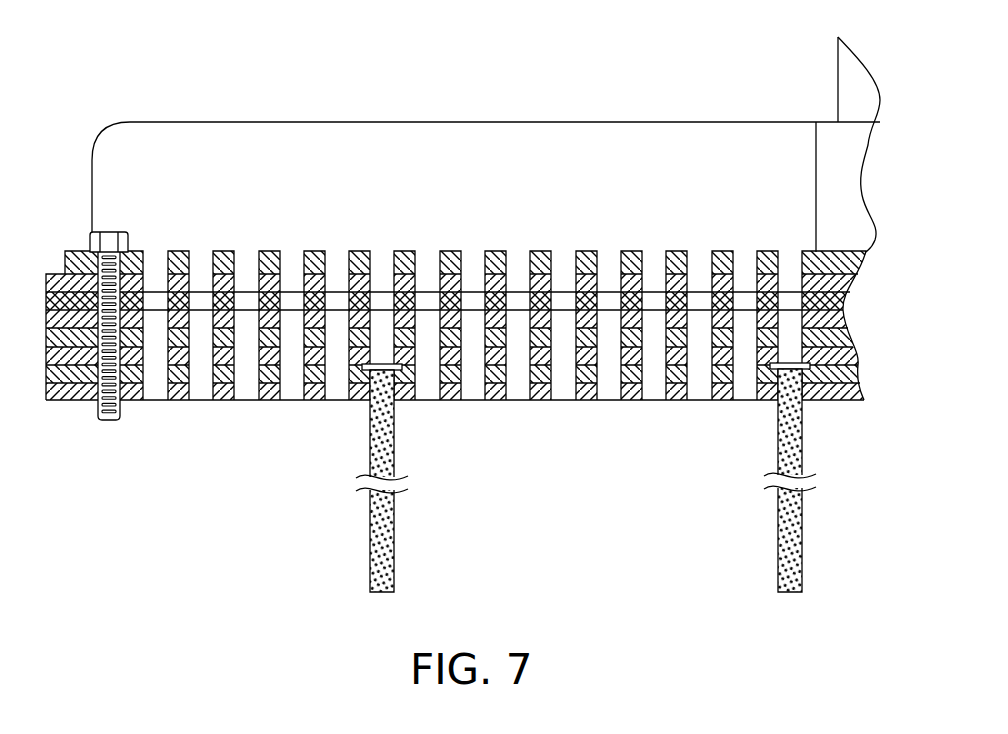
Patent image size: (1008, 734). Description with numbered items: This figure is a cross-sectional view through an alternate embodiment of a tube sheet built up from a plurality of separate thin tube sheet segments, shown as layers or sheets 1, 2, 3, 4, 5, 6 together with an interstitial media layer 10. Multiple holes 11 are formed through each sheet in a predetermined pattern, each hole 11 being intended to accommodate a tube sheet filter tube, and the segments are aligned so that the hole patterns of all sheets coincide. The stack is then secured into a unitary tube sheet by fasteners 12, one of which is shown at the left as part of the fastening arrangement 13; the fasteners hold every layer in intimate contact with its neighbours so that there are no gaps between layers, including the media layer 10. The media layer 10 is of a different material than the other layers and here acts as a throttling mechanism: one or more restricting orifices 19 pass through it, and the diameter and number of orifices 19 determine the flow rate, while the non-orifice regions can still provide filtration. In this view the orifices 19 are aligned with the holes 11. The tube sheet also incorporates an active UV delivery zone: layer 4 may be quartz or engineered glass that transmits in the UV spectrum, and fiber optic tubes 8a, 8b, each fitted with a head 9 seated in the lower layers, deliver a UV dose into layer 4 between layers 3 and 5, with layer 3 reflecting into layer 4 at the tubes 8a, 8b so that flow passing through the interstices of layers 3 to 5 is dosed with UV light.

The tube sheet segment 1 is at (55, 273).
The media layer 10 is at (848, 300).
The tube sheet segment 2 is at (836, 318).
The tube sheet segment 3 is at (840, 337).
The tube sheet segment 4 is at (840, 360).
The tube sheet segment 5 is at (843, 375).
The tube sheet segment 6 is at (840, 398).
The fiber optic tube 8a is at (385, 437).
The fiber optic tube 8b is at (790, 448).
The pin head 9 is at (358, 364).
The hole 11 is at (565, 258).
The fastener 12 is at (110, 240).
The fastening arrangement 13 is at (71, 246).
The restricting orifice 19 is at (338, 300).